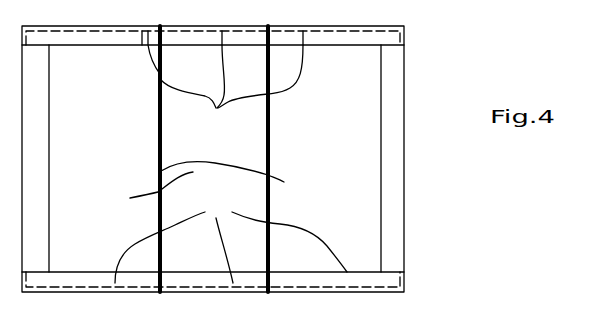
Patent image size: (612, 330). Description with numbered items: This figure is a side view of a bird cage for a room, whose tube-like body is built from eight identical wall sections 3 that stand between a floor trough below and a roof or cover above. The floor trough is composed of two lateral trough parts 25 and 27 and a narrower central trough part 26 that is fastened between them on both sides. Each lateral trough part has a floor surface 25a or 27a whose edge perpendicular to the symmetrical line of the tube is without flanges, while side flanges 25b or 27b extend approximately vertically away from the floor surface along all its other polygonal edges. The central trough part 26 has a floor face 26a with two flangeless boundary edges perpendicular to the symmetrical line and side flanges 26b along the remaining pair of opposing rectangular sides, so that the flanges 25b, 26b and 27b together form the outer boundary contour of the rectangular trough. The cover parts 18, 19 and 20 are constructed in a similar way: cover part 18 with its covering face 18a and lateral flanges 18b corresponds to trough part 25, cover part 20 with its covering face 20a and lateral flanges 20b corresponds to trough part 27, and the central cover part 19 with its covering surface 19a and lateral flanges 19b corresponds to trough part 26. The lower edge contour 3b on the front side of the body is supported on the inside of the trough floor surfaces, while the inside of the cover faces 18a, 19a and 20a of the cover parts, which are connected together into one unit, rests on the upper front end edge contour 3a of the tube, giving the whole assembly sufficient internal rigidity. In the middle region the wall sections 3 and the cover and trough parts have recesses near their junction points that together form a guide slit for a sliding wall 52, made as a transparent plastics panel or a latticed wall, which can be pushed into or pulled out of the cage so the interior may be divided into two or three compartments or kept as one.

The wall section 3 is at (37, 181).
The upper front end edge contour 3a is at (232, 87).
The lower edge contour 3b is at (231, 241).
The cover part 18 is at (71, 36).
The covering face 18a is at (109, 36).
The lateral flanges 18b is at (141, 44).
The cover part 19 is at (179, 37).
The covering surface 19a is at (210, 34).
The lateral flanges 19b is at (248, 35).
The cover part 20 is at (292, 37).
The covering face 20a is at (331, 36).
The lateral flanges 20b is at (367, 36).
The trough part 25 is at (76, 297).
The floor surface 25a is at (127, 294).
The side flanges 25b is at (70, 283).
The central trough part 26 is at (214, 297).
The floor face 26a is at (240, 294).
The side flanges 26b is at (185, 284).
The trough part 27 is at (334, 297).
The floor surface 27a is at (363, 294).
The side flanges 27b is at (288, 284).
The sliding wall 52 is at (282, 182).